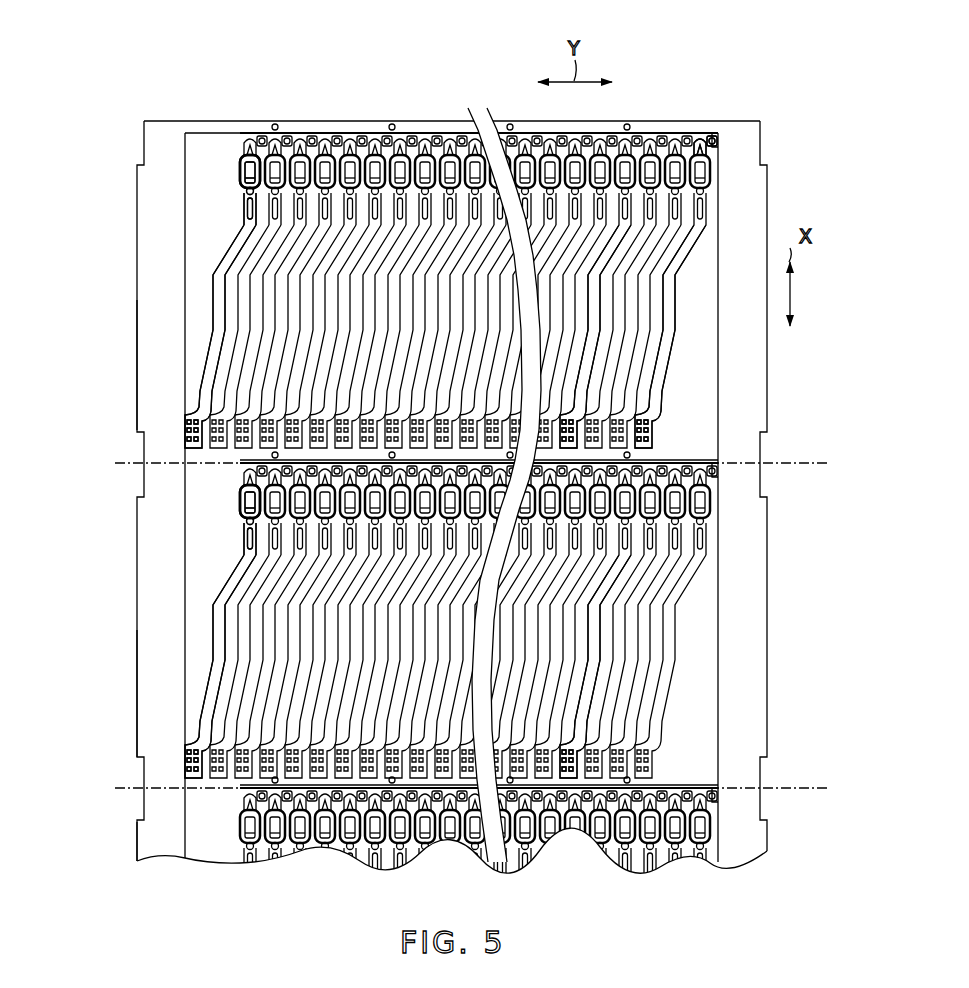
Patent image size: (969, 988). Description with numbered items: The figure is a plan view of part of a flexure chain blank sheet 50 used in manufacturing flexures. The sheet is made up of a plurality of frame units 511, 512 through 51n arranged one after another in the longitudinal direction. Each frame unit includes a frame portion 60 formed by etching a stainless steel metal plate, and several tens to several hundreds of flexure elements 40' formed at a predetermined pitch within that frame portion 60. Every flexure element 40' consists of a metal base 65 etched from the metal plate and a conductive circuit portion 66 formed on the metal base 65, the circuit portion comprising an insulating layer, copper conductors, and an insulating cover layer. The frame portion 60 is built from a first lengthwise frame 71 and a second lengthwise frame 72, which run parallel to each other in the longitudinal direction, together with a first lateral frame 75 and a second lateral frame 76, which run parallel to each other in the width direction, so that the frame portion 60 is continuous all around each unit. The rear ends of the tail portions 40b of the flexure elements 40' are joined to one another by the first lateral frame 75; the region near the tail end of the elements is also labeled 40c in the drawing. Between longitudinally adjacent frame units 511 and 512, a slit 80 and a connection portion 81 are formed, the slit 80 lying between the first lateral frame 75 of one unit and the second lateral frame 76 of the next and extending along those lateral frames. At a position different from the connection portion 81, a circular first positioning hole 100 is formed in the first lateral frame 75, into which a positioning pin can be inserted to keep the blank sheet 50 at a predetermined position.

The flexure chain blank sheet 50 is at (371, 77).
The frame portion 60 is at (213, 118).
The conductive circuit portion 66 is at (243, 174).
The second lengthwise frame 72 is at (146, 235).
The flexure element 40' is at (451, 508).
The metal base 65 is at (213, 325).
The frame unit 511 is at (131, 376).
The frame unit 512 is at (131, 710).
The frame unit 51n is at (131, 850).
The first lengthwise frame 71 is at (768, 206).
The tail portion 40b is at (672, 360).
The connection portion 81 is at (577, 460).
The first positioning hole 100 is at (628, 451).
The slit 80 is at (663, 456).
The first lateral frame 75 is at (664, 125).
The contact tab 40c is at (700, 132).
The second lateral frame 76 is at (725, 138).